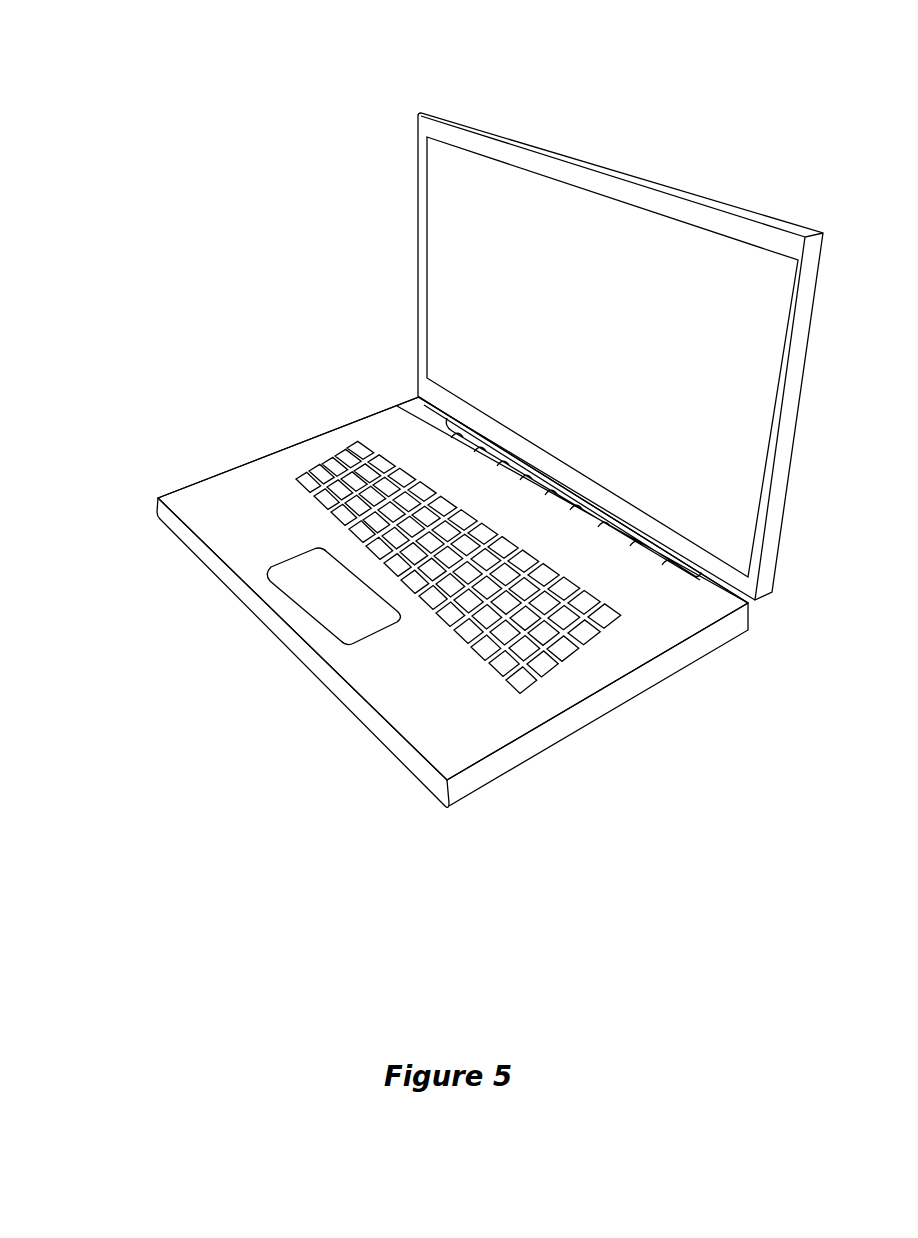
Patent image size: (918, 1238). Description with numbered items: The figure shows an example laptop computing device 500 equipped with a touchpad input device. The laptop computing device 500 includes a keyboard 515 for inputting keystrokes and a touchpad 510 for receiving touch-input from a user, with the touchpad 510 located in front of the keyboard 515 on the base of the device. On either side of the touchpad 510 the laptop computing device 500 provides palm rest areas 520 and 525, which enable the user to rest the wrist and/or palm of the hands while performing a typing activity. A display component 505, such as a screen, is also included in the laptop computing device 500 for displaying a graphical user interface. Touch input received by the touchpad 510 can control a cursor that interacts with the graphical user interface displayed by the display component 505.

The laptop computing device 500 is at (88, 53).
The display component 505 is at (505, 345).
The touchpad 510 is at (337, 610).
The keyboard 515 is at (540, 655).
The palm rest area 520 is at (276, 530).
The palm rest area 525 is at (423, 686).